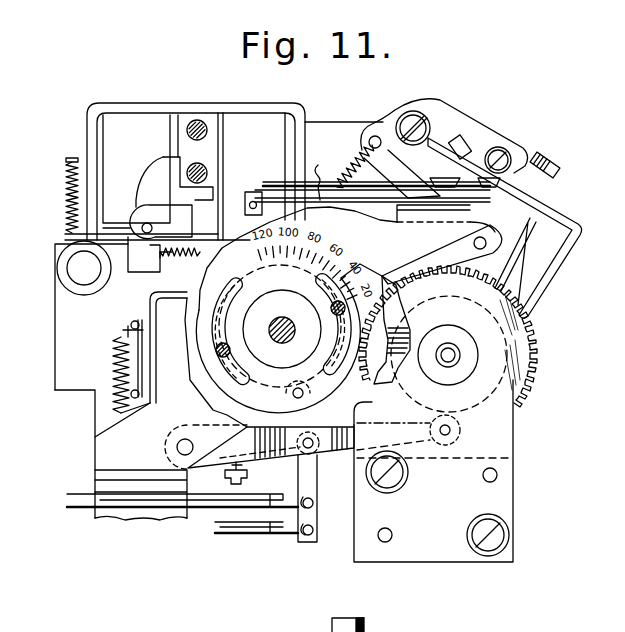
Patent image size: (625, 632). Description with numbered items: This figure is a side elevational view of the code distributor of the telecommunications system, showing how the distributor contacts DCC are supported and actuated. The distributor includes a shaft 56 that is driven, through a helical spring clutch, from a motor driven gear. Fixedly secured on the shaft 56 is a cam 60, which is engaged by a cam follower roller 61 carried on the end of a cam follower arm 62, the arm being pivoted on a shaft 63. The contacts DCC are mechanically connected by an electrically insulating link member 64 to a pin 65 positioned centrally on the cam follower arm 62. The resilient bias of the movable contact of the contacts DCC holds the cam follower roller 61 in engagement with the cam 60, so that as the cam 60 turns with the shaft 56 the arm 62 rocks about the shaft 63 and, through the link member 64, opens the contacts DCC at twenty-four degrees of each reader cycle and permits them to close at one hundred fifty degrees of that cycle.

The shaft 56 is at (450, 353).
The cam 60 is at (480, 397).
The cam follower roller 61 is at (446, 446).
The cam follower arm 62 is at (333, 455).
The shaft 63 is at (186, 439).
The electrically insulating link member 64 is at (312, 488).
The pin 65 is at (317, 442).
The distributor contacts DCC is at (212, 507).